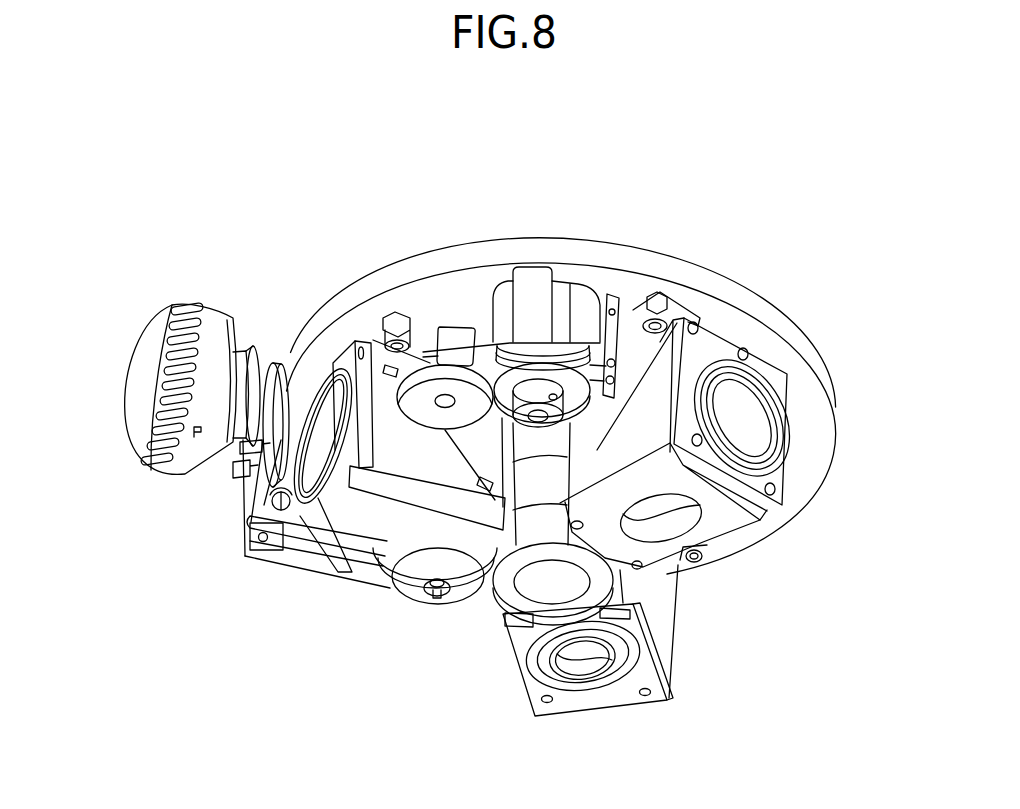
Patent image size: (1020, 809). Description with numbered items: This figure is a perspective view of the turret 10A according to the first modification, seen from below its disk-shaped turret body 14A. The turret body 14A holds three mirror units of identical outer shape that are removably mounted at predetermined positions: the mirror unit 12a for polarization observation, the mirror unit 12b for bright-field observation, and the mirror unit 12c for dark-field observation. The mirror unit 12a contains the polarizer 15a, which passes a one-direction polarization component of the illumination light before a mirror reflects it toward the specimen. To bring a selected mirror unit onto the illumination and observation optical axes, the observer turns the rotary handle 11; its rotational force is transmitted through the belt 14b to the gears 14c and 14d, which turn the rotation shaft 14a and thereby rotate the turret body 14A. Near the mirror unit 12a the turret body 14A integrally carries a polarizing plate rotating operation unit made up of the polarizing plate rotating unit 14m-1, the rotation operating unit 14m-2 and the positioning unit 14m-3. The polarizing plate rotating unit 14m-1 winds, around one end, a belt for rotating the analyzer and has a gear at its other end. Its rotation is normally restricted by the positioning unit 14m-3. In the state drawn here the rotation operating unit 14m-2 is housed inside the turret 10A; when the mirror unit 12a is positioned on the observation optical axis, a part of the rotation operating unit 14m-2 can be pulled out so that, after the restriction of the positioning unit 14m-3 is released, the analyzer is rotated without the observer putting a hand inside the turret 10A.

The turret 10A is at (716, 174).
The rotary handle 11 is at (147, 366).
The mirror unit for polarization observation 12a is at (777, 475).
The mirror unit for bright-field observation 12b is at (378, 392).
The mirror unit for dark-field observation 12c is at (610, 700).
The turret body 14A is at (762, 312).
The rotation shaft 14a is at (545, 477).
The belt 14b is at (350, 530).
The gear 14c is at (487, 578).
The gear 14d is at (525, 607).
The polarizing plate rotating unit 14m-1 is at (567, 387).
The rotation operating unit 14m-2 is at (417, 383).
The positioning unit 14m-3 is at (530, 283).
The polarizer 15a is at (760, 428).